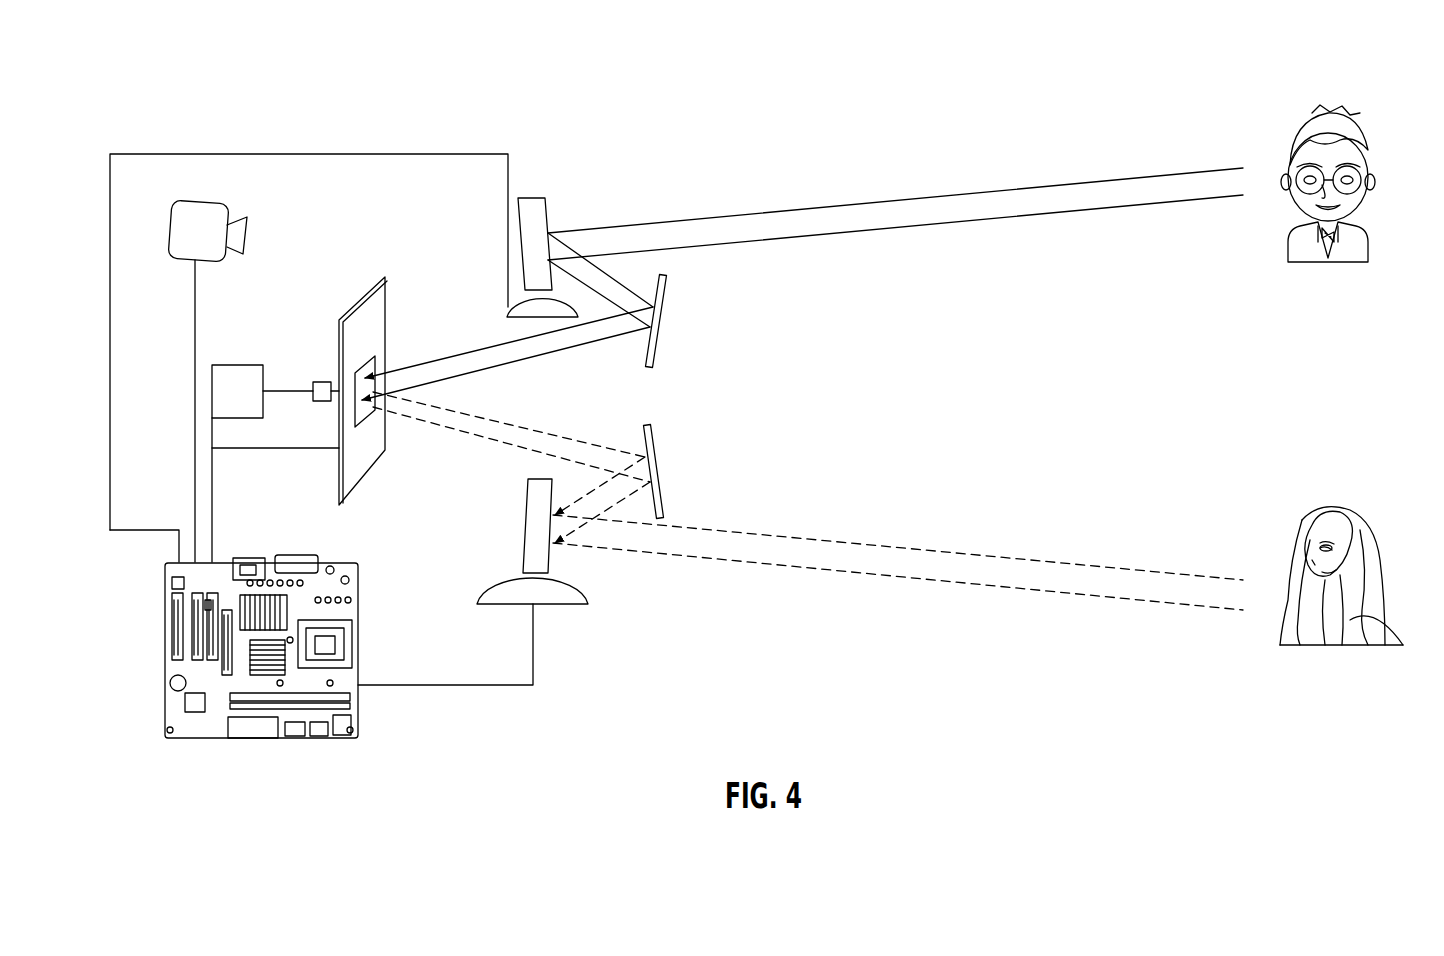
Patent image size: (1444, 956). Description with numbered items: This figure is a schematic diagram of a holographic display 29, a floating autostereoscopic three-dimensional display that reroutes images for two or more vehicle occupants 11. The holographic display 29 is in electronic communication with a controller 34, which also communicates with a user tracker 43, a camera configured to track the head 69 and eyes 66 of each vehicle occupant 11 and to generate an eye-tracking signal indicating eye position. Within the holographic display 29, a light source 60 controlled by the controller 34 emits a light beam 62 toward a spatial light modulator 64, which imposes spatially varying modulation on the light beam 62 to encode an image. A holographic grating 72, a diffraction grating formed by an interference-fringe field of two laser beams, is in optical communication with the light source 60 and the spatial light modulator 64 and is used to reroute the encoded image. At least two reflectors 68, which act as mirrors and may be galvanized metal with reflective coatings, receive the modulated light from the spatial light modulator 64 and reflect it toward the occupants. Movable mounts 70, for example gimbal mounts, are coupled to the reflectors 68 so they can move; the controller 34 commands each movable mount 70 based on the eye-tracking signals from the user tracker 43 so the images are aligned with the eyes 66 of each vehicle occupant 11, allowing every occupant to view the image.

The holographic display 29 is at (174, 90).
The user tracker 43 is at (172, 228).
The light source 60 is at (238, 365).
The light beam 62 is at (290, 388).
The spatial light modulator 64 is at (387, 312).
The eyes 66 is at (1308, 172).
The reflector 68 is at (520, 232).
The head 69 is at (1330, 113).
The movable mount 70 is at (507, 310).
The holographic grating 72 is at (322, 404).
The controller 34 is at (163, 612).
The vehicle occupant 11 is at (1365, 130).